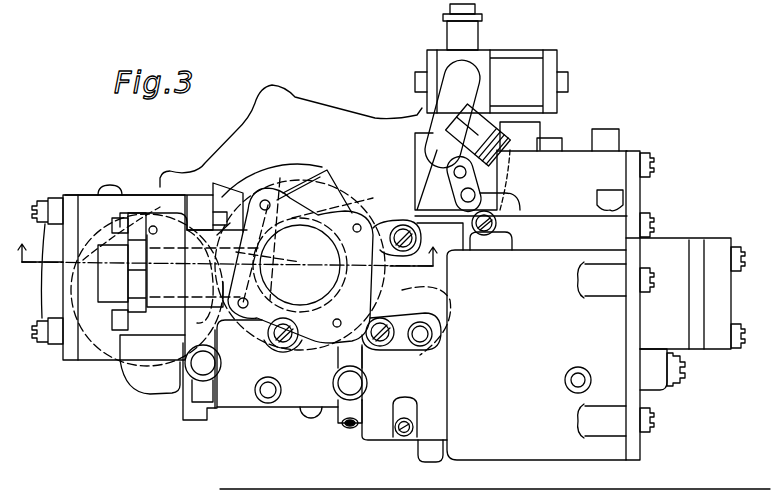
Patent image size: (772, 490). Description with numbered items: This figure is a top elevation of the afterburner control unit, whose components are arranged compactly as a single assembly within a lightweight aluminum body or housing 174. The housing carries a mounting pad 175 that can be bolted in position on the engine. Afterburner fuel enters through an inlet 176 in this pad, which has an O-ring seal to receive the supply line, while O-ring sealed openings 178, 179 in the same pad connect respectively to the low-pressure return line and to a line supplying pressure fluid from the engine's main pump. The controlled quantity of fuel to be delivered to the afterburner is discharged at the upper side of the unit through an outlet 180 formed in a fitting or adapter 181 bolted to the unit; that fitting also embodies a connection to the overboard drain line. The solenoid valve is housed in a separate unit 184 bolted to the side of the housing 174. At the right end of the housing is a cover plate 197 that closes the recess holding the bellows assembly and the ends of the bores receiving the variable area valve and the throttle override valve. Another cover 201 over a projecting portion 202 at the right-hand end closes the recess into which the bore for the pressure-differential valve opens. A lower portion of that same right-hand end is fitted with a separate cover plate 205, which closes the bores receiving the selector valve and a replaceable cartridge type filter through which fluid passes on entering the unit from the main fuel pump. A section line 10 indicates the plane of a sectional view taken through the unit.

The section line 10- 10 is at (229, 248).
The housing 174 is at (372, 432).
The mounting pad 175 is at (281, 99).
The inlet 176 is at (279, 181).
The O-ring sealed opening 178 is at (193, 323).
The O-ring sealed opening 179 is at (499, 192).
The outlet 180 is at (333, 288).
The fitting 181 is at (350, 278).
The separate unit 184 is at (483, 58).
The cover plate 197 is at (630, 450).
The cover 201 is at (695, 253).
The projecting portion 202 is at (667, 252).
The cover plate 205 is at (631, 150).